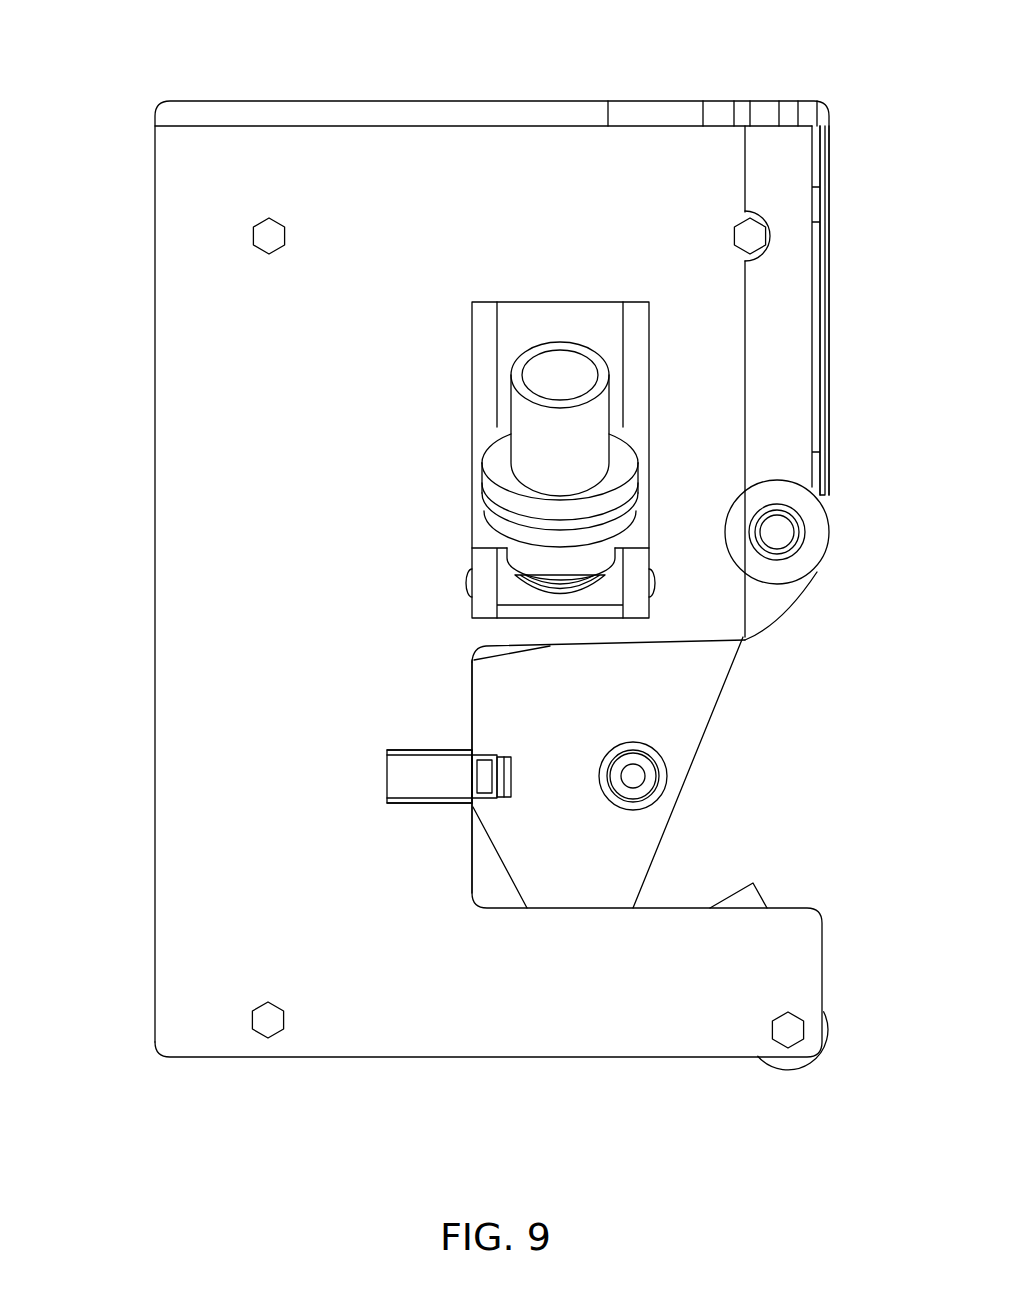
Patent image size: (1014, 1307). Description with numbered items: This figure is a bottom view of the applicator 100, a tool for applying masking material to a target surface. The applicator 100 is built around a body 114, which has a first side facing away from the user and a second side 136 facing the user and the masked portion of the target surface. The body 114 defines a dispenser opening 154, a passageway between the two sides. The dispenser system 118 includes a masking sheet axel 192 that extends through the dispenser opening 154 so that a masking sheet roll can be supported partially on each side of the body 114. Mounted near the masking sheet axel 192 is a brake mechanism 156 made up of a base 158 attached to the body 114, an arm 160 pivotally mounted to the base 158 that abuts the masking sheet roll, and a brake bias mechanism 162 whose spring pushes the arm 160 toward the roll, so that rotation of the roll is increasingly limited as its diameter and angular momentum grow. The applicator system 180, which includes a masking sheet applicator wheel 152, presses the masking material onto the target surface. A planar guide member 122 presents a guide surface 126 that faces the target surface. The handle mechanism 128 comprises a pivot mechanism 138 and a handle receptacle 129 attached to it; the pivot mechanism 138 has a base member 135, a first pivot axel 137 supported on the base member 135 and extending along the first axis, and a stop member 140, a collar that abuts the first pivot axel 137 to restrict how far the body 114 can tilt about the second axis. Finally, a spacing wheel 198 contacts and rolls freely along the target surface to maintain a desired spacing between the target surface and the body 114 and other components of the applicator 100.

The applicator 100 is at (63, 68).
The body 114 is at (172, 167).
The dispenser system 118 is at (694, 814).
The guide member 122 is at (824, 158).
The guide surface 126 is at (829, 203).
The handle mechanism 128 is at (405, 496).
The handle receptacle 129 is at (590, 417).
The base member 135 is at (603, 308).
The second side 136 is at (172, 276).
The first pivot axel 137 is at (466, 580).
The pivot mechanism 138 is at (432, 527).
The stop member 140 is at (495, 455).
The masking sheet applicator wheel 152 is at (813, 530).
The dispenser opening 154 is at (472, 842).
The brake mechanism 156 is at (389, 708).
The base 158 is at (393, 778).
The arm 160 is at (509, 776).
The brake bias mechanism 162 is at (480, 772).
The applicator system 180 is at (850, 488).
The masking sheet axel 192 is at (640, 755).
The spacing wheel 198 is at (788, 1062).